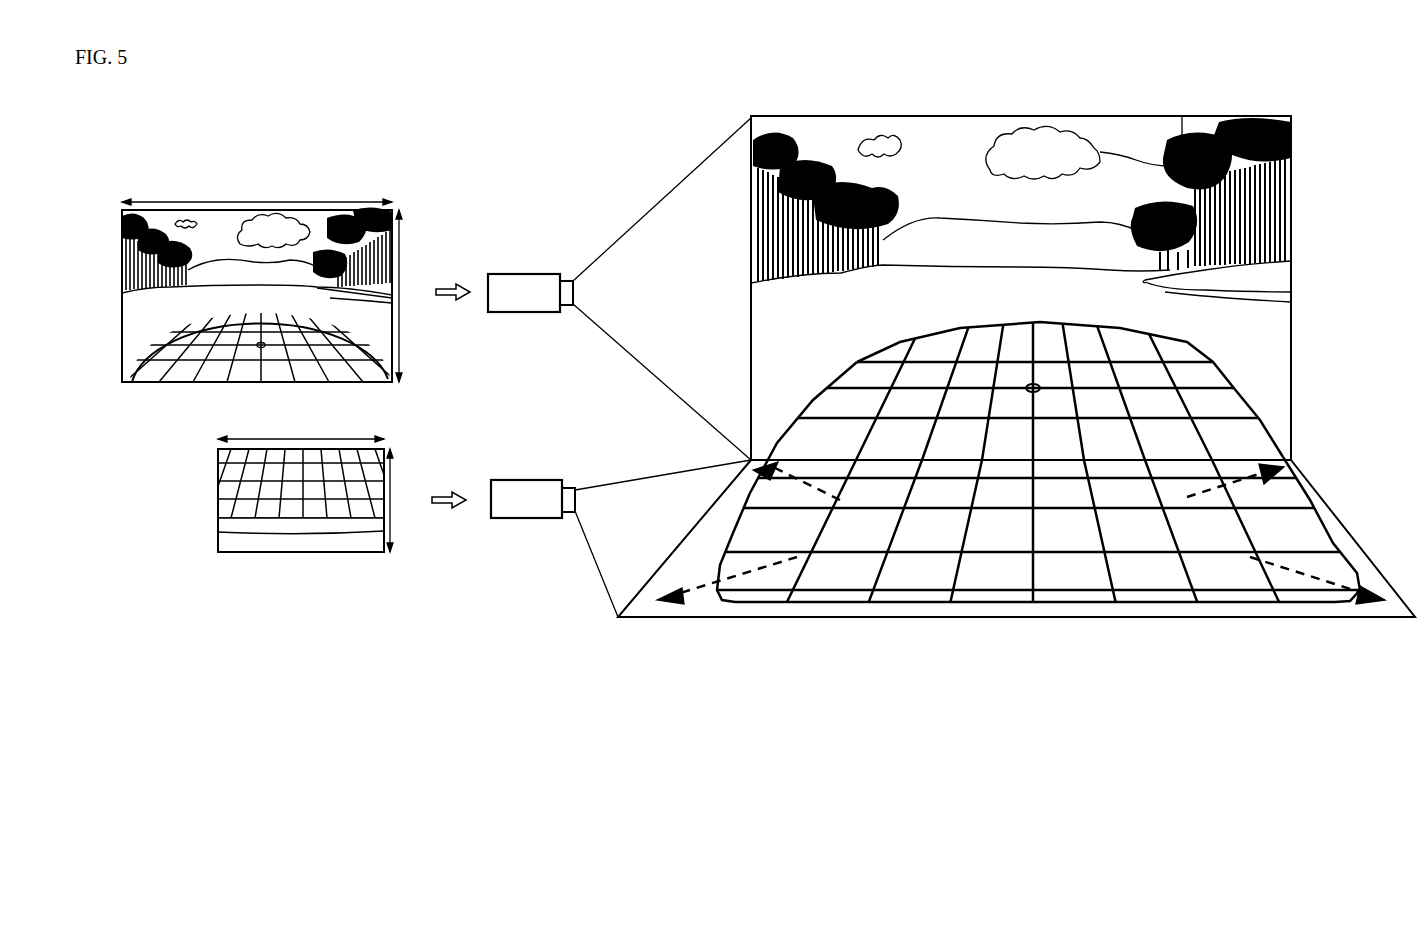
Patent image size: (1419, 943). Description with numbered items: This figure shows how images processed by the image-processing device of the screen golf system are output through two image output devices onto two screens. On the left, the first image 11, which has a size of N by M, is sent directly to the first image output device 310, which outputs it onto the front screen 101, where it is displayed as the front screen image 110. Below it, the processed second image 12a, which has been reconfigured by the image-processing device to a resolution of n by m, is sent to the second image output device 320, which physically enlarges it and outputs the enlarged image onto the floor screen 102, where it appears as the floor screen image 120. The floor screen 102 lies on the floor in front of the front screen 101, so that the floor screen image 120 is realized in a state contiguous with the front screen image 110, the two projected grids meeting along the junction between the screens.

The first image 11 is at (122, 280).
The processed second image 12a is at (218, 491).
The first image output device 310 is at (525, 272).
The second image output device 320 is at (528, 478).
The front screen 101 is at (1291, 332).
The floor screen 102 is at (1337, 505).
The front screen image 110 is at (781, 302).
The floor screen image 120 is at (694, 514).